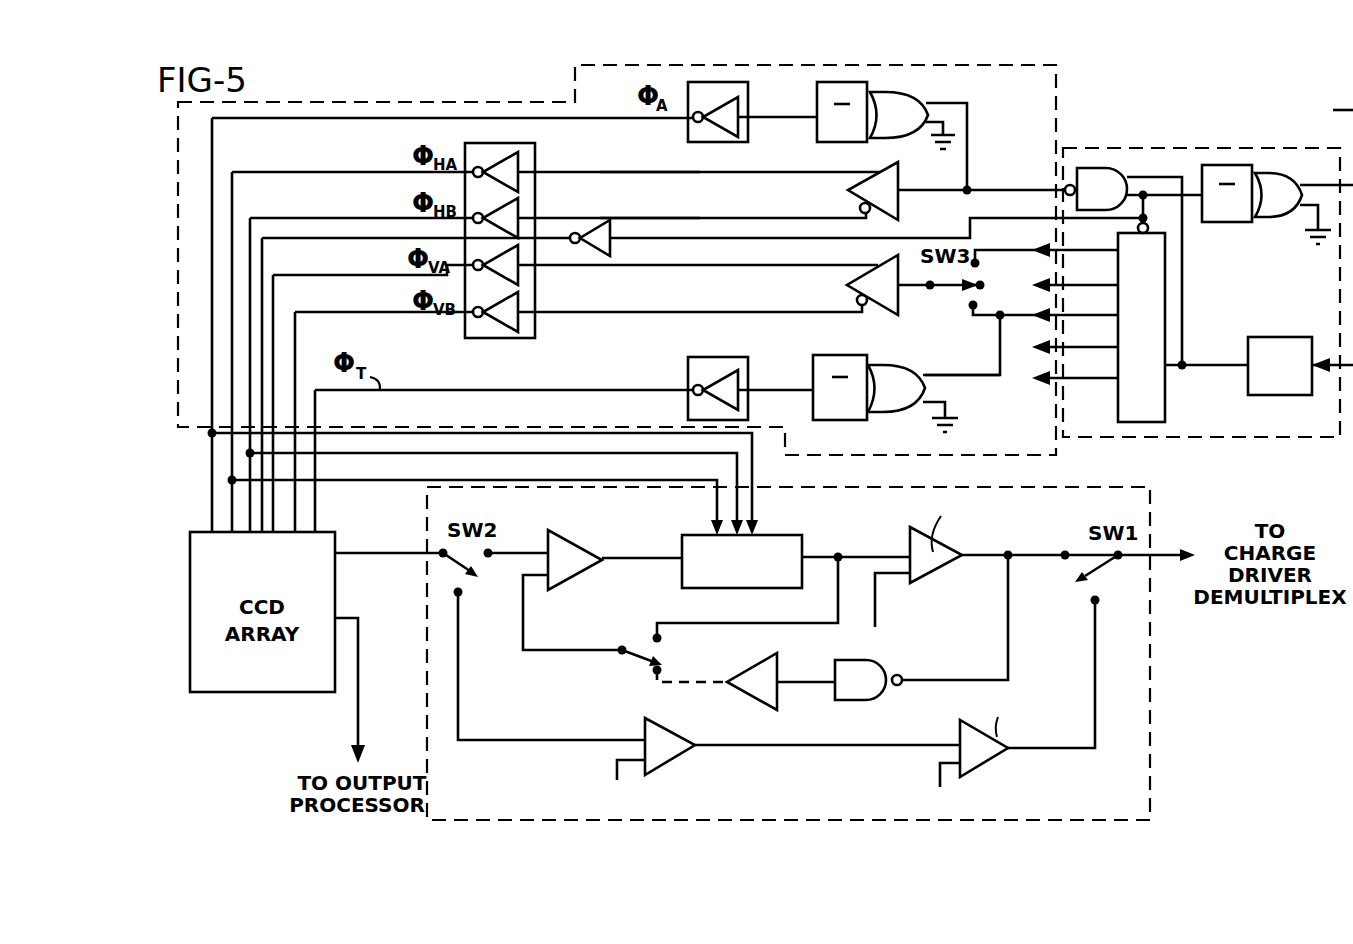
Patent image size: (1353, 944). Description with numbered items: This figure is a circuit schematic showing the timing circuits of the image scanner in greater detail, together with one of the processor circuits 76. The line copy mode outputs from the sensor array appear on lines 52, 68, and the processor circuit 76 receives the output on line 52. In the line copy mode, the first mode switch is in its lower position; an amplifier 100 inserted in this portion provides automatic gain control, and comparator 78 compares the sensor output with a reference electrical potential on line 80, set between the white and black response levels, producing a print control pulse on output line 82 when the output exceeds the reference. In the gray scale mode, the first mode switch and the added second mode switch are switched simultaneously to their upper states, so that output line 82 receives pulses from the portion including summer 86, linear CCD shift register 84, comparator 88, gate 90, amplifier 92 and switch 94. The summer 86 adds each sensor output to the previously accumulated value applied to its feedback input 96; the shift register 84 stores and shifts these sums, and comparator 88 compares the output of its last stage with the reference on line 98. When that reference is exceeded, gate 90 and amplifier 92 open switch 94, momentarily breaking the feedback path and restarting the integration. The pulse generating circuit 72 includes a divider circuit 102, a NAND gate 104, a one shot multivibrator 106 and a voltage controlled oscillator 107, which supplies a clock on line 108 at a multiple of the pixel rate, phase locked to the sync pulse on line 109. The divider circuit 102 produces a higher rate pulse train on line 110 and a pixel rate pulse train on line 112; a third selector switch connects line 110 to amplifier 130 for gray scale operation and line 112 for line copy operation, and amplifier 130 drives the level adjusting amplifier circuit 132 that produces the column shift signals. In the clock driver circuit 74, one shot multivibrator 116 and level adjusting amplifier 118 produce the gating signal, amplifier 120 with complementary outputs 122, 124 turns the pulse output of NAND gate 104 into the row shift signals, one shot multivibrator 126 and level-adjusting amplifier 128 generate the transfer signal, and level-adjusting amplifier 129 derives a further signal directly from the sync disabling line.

The line 52 is at (383, 550).
The line 68 is at (360, 645).
The pulse generating circuit 72 is at (1133, 147).
The clock driver circuit 74 is at (1058, 97).
The processor circuit 76 is at (427, 598).
The comparator 78 is at (987, 758).
The line 80 is at (938, 770).
The output line 82 is at (1167, 547).
The linear CCD shift register 84 is at (770, 535).
The summer 86 is at (575, 543).
The comparator 88 is at (935, 570).
The gate 90 is at (853, 693).
The amplifier 92 is at (768, 670).
The switch 94 is at (637, 645).
The feedback input 96 is at (577, 652).
The line 98 is at (877, 587).
The amplifier 100 is at (668, 747).
The divider circuit 102 is at (1160, 392).
The NAND gate 104 is at (1100, 170).
The one shot multivibrator 106 is at (1227, 165).
The voltage controlled oscillator 107 is at (1283, 337).
The line 108 is at (1217, 362).
The line 109 is at (1337, 108).
The line 110 is at (983, 253).
The line 112 is at (1025, 313).
The one shot multivibrator 116 is at (816, 132).
The level adjusting amplifier 118 is at (692, 132).
The amplifier 120 is at (893, 202).
The complementary output 122 is at (728, 173).
The complementary output 124 is at (697, 217).
The one shot multivibrator 126 is at (852, 355).
The level-adjusting amplifier 128 is at (723, 350).
The level-adjusting amplifier 129 is at (613, 247).
The amplifier 130 is at (893, 297).
The level adjusting amplifier circuit 132 is at (503, 340).